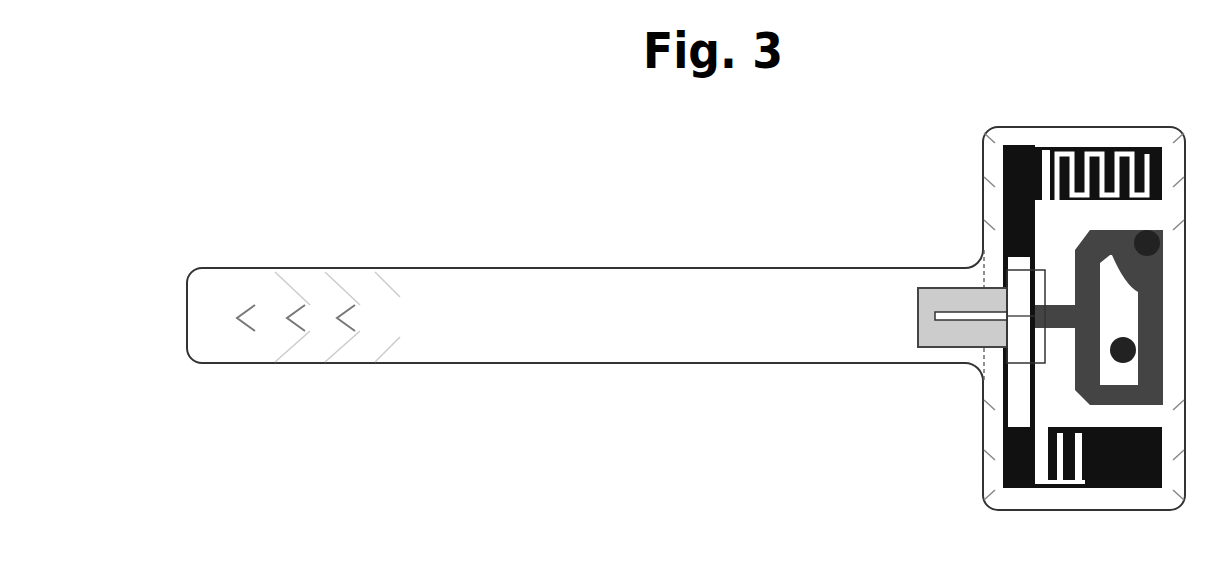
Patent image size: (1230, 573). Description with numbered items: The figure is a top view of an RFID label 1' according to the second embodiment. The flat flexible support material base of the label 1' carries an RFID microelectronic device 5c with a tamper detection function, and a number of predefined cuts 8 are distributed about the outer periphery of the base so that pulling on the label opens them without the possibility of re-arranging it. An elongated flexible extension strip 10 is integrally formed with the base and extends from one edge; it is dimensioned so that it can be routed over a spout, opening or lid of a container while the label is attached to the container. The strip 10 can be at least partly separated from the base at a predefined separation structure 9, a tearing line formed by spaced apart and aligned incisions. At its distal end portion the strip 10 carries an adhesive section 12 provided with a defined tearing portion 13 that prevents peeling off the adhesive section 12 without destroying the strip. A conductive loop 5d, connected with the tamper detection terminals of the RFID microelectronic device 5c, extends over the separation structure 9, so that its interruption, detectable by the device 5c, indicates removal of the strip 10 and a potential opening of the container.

The RFID label 1' is at (686, 269).
The predefined cuts 8 is at (988, 126).
The RFID microelectronic device 5c is at (1022, 316).
The conductive loop 5d is at (937, 332).
The predefined separation structure 9 is at (985, 312).
The elongated flexible extension strip 10 is at (607, 322).
The adhesive section 12 is at (283, 297).
The defined tearing portion 13 is at (300, 333).